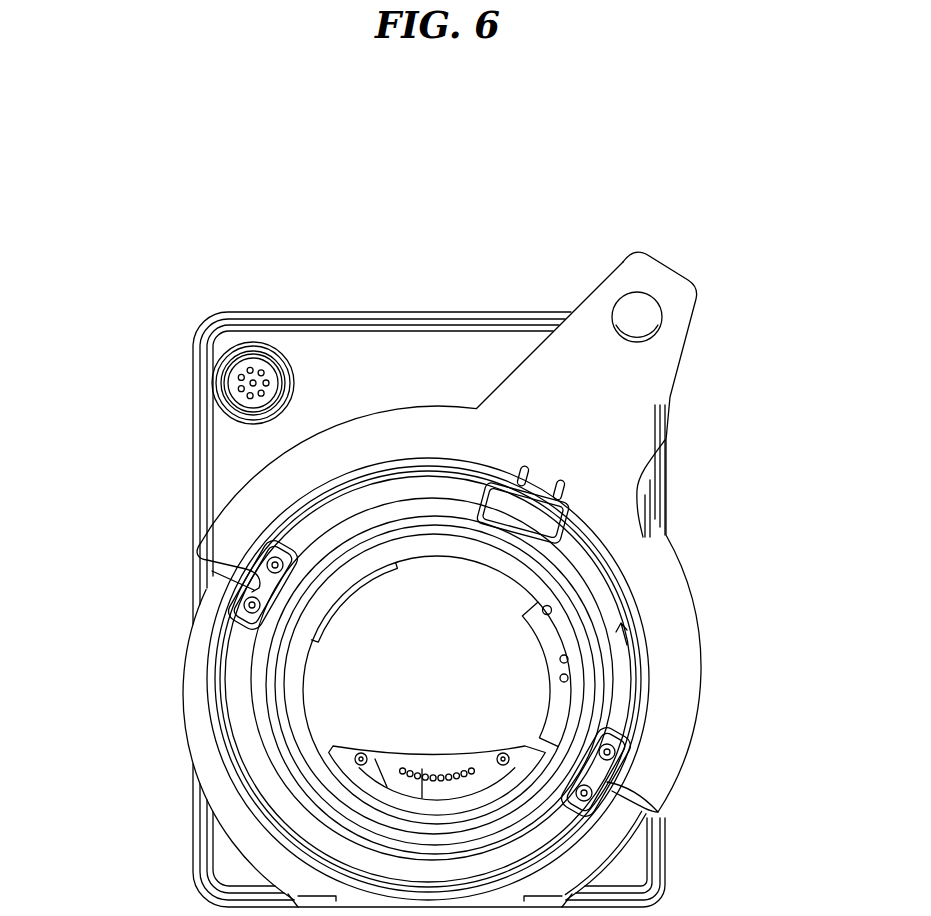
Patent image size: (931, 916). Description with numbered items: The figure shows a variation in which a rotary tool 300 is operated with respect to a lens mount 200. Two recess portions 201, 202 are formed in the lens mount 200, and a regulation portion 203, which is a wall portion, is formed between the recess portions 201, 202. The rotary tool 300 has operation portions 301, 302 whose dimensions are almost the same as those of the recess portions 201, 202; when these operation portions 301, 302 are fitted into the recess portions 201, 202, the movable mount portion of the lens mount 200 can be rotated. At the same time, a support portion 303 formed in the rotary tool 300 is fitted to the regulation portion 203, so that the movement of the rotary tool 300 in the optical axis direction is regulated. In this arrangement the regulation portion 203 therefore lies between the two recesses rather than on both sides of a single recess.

The lens mount 200 is at (222, 743).
The recess portion 201 is at (195, 572).
The recess portion 202 is at (613, 787).
The regulation portion 203 is at (553, 483).
The rotary tool 300 is at (615, 388).
The operation portion 301 is at (197, 542).
The operation portion 302 is at (663, 817).
The support portion 303 is at (530, 458).